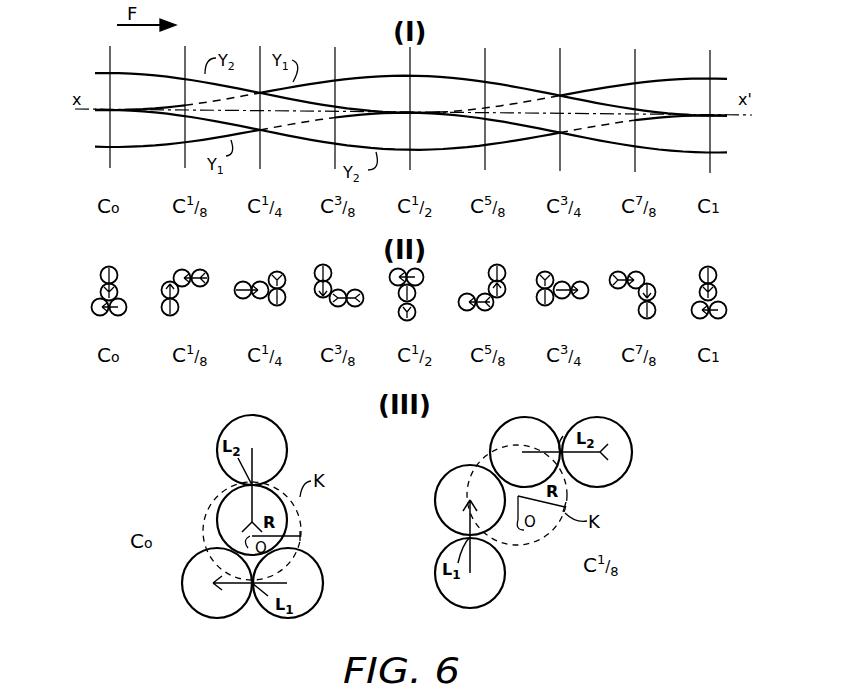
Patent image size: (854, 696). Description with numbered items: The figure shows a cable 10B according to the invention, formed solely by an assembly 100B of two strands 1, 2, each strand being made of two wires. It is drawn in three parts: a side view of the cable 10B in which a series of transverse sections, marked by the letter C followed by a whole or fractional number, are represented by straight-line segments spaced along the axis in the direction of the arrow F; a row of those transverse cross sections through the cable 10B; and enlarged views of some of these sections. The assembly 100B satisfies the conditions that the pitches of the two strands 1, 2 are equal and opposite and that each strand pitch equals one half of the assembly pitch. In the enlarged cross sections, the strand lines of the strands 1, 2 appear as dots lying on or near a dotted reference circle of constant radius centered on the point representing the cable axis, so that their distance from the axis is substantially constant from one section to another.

The strand 1 is at (152, 148).
The strand 2 is at (152, 73).
The cable 10B is at (497, 68).
The assembly 100B is at (561, 94).